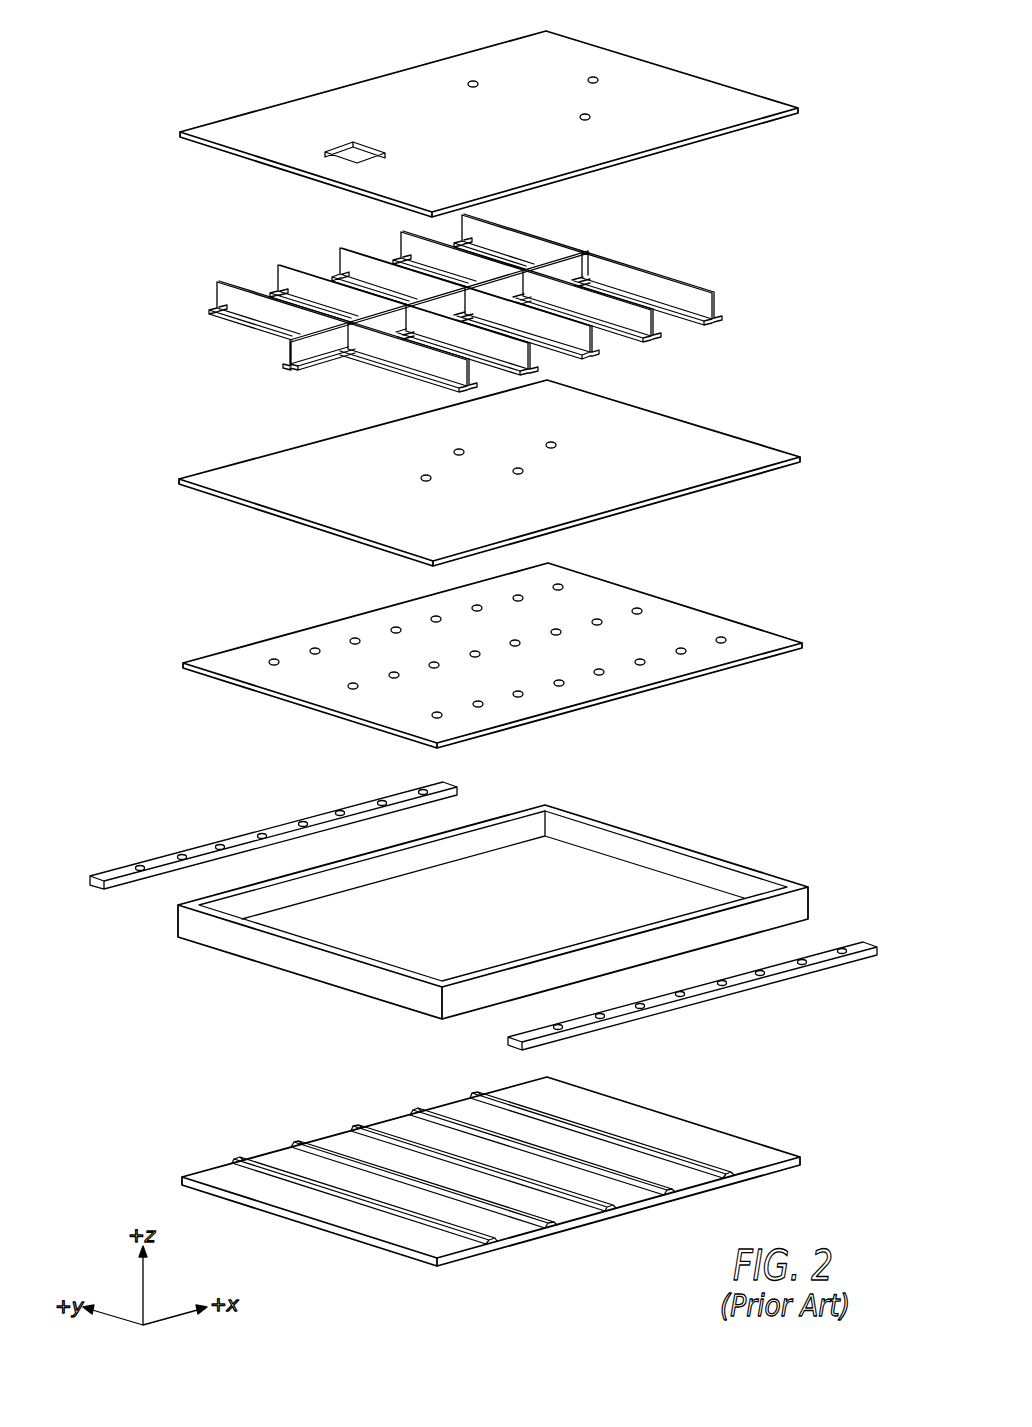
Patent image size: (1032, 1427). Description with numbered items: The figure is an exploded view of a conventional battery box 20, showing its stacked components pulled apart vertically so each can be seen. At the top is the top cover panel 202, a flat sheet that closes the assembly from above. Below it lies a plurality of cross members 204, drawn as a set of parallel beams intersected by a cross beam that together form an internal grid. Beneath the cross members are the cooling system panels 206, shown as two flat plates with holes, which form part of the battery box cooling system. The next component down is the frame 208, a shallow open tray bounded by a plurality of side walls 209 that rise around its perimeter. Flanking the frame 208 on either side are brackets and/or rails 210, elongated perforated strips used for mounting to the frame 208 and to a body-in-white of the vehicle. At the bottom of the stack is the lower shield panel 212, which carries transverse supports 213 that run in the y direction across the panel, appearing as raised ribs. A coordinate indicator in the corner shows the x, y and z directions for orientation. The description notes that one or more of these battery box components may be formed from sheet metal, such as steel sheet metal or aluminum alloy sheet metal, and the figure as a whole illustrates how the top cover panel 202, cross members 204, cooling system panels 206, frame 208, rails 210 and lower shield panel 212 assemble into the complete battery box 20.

The battery box 20 is at (143, 56).
The top cover panel 202 is at (736, 90).
The cross members 204 is at (679, 281).
The cooling system panels 206 is at (738, 440).
The frame 208 is at (498, 895).
The side walls 209 is at (583, 942).
The brackets and/or rails 210 is at (200, 845).
The lower shield panel 212 is at (491, 1171).
The transverse supports 213 is at (237, 1157).